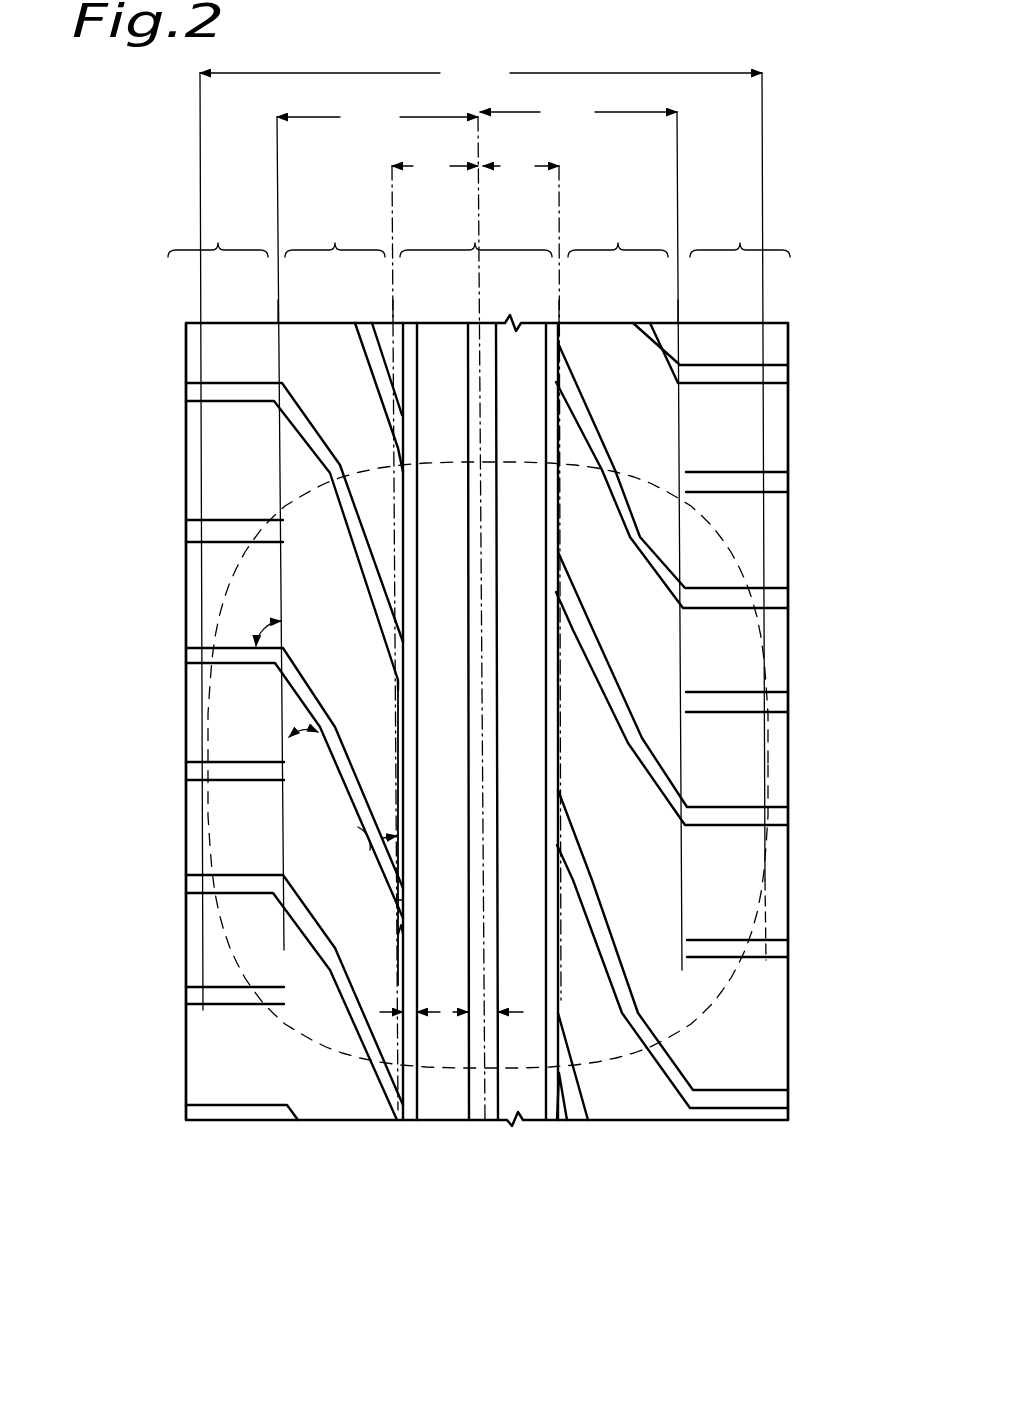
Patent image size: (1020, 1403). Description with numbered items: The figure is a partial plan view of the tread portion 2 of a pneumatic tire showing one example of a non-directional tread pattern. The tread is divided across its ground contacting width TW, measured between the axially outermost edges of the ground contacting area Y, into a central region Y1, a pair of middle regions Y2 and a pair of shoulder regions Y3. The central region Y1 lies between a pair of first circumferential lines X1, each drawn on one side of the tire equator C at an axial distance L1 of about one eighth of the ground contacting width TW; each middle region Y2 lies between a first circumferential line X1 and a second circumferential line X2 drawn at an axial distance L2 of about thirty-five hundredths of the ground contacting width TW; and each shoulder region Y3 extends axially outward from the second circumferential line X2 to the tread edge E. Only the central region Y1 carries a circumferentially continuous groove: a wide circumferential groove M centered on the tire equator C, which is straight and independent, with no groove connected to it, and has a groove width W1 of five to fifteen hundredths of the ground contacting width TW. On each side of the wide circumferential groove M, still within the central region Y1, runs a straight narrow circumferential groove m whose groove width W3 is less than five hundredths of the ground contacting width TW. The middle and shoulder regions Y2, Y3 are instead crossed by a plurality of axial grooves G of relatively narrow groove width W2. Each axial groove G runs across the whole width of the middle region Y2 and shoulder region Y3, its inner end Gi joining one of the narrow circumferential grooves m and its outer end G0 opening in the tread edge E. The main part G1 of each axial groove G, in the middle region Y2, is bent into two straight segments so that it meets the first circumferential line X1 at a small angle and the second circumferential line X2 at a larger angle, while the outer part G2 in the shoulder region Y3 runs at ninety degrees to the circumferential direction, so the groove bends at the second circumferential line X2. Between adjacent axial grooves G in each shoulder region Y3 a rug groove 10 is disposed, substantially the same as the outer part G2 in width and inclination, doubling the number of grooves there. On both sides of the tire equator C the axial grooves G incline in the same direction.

The tread portion 2 is at (830, 285).
The rug groove 10 is at (747, 472).
The tread edge E is at (186, 366).
The axial groove G is at (397, 793).
The outer end G0 is at (163, 637).
The main part G1 is at (372, 847).
The outer part G2 is at (270, 664).
The inner end Gi is at (403, 965).
The wide circumferential groove M is at (484, 1105).
The narrow circumferential groove m is at (407, 1080).
The ground contacting area Y is at (743, 977).
The tire equator C is at (477, 296).
The ground contacting width TW is at (481, 73).
The axial distance L1 is at (475, 163).
The axial distance L2 is at (477, 112).
The central region Y1 is at (476, 234).
The middle region Y2 is at (476, 232).
The shoulder region Y3 is at (479, 232).
The first circumferential line X1 is at (393, 293).
The second circumferential line X2 is at (278, 298).
The groove width W1 is at (480, 1103).
The groove width W2 is at (399, 930).
The groove width W3 is at (404, 1093).